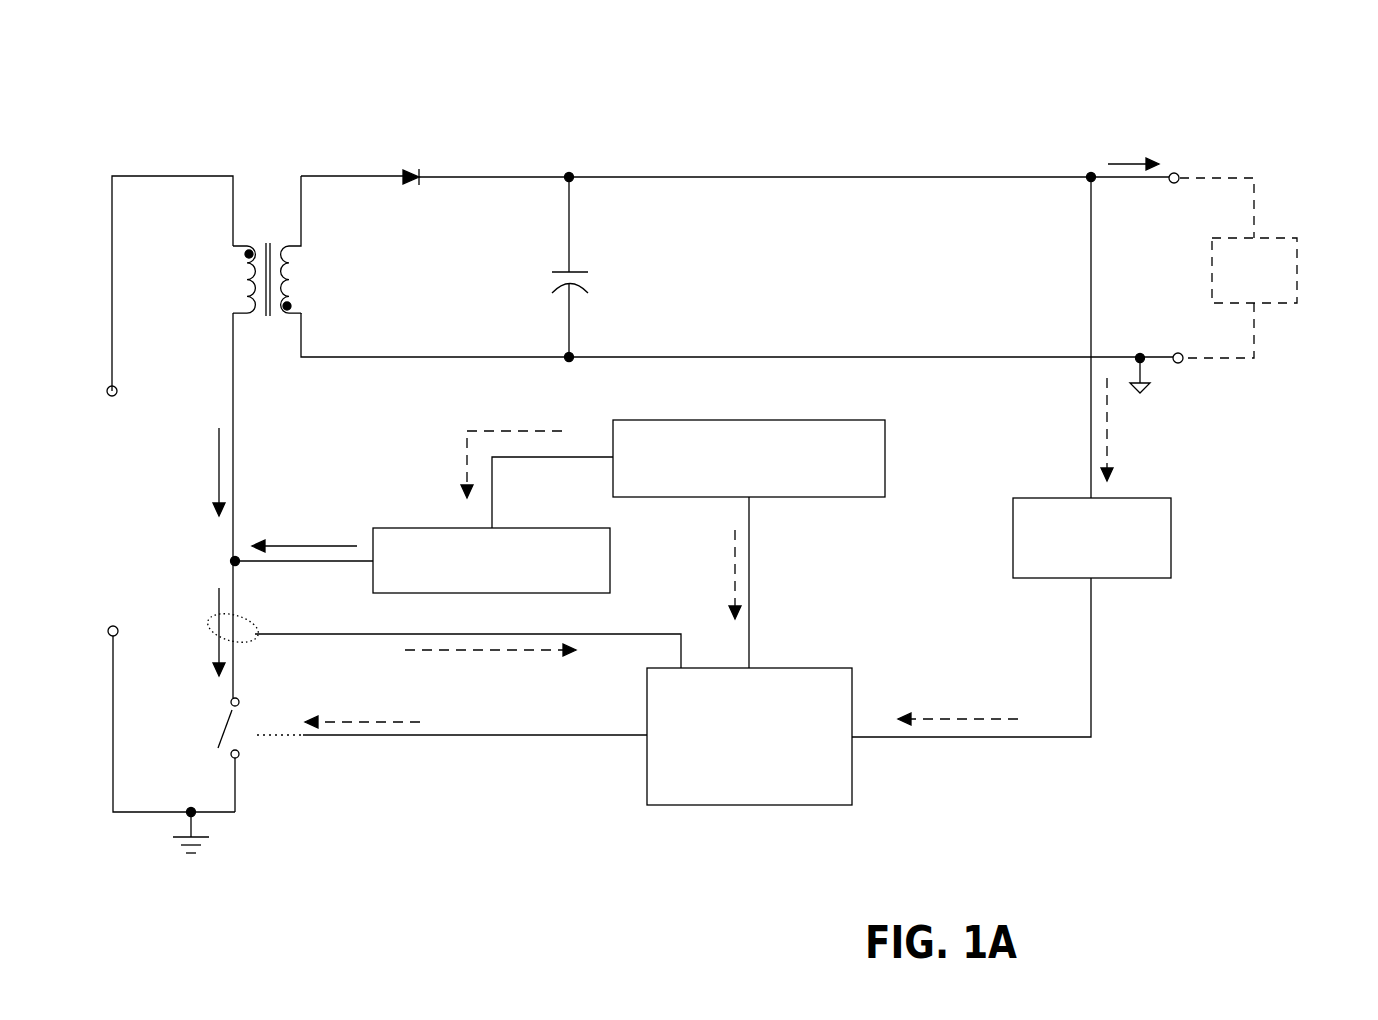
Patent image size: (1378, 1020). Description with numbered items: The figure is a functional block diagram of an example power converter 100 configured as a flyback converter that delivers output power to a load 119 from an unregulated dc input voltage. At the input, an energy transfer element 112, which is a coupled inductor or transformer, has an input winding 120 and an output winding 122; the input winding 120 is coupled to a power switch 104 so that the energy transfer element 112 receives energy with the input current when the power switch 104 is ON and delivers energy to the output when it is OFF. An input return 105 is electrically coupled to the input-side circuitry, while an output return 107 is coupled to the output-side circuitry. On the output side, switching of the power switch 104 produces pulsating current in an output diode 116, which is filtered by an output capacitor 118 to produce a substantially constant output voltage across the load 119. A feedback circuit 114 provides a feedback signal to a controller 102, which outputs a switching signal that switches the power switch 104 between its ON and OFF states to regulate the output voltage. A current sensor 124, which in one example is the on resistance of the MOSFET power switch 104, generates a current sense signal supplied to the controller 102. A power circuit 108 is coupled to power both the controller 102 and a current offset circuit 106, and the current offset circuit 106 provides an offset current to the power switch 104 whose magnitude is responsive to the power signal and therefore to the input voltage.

The power converter 100 is at (1254, 94).
The controller 102 is at (832, 661).
The power switch 104 is at (220, 716).
The input return 105 is at (208, 855).
The current offset circuit 106 is at (408, 526).
The output return 107 is at (1160, 393).
The power circuit 108 is at (878, 410).
The energy transfer element 112 is at (270, 287).
The feedback circuit 114 is at (1049, 493).
The output diode 116 is at (435, 163).
The output capacitor 118 is at (600, 263).
The load 119 is at (1290, 308).
The input winding 120 is at (233, 285).
The output winding 122 is at (305, 285).
The current sensor 124 is at (247, 616).